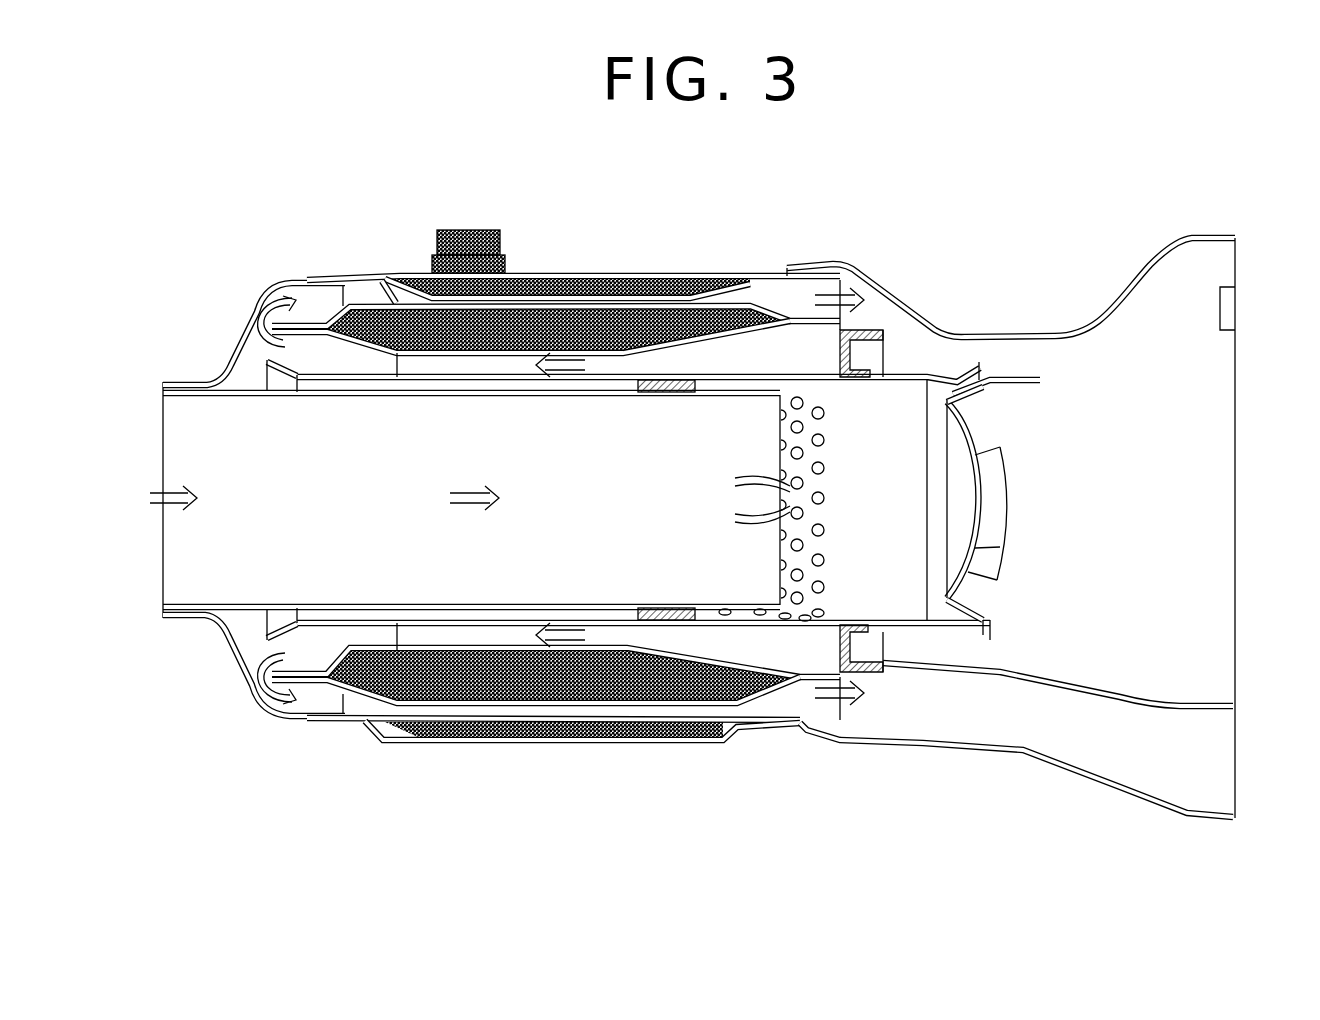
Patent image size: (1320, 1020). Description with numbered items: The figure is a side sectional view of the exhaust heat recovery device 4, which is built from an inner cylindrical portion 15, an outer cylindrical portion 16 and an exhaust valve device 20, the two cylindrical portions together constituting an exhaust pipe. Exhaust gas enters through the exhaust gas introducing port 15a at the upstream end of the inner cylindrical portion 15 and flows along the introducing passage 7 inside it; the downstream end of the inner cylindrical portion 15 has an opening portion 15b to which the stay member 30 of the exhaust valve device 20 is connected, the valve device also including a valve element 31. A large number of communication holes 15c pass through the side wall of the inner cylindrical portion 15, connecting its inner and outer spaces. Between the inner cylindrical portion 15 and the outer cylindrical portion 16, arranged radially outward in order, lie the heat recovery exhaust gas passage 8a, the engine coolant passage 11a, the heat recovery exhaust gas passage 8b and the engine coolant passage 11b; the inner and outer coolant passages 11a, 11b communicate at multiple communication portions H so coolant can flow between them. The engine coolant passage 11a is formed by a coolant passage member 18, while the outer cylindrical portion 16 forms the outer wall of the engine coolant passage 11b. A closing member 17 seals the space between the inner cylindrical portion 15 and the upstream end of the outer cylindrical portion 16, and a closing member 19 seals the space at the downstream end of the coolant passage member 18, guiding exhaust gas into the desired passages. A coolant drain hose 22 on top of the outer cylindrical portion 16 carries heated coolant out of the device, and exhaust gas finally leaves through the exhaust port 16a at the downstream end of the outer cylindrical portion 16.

The exhaust heat recovery device 4 is at (858, 192).
The introducing passage 7 is at (576, 476).
The heat recovery exhaust gas passage 8a is at (740, 352).
The heat recovery exhaust gas passage 8b is at (317, 298).
The engine coolant passage 11a is at (520, 320).
The engine coolant passage 11b is at (553, 283).
The inner cylindrical portion 15 is at (933, 363).
The exhaust gas introducing port 15a is at (172, 467).
The opening portion 15b is at (998, 440).
The communication holes 15c is at (821, 533).
The outer cylindrical portion 16 is at (617, 270).
The exhaust port 16a is at (1220, 478).
The closing member 17 is at (240, 337).
The coolant passage member 18 is at (811, 265).
The closing member 19 is at (847, 353).
The exhaust valve device 20 is at (987, 650).
The coolant drain hose 22 is at (502, 230).
The stay member 30 is at (967, 632).
The valve element 31 is at (1023, 377).
The communication portions H is at (433, 277).